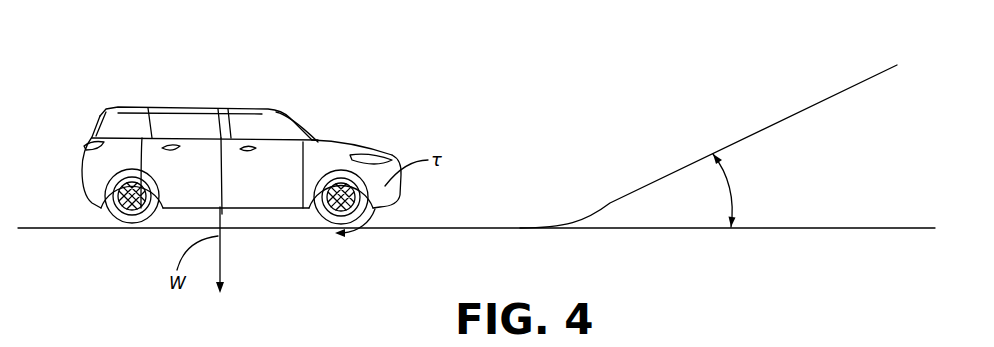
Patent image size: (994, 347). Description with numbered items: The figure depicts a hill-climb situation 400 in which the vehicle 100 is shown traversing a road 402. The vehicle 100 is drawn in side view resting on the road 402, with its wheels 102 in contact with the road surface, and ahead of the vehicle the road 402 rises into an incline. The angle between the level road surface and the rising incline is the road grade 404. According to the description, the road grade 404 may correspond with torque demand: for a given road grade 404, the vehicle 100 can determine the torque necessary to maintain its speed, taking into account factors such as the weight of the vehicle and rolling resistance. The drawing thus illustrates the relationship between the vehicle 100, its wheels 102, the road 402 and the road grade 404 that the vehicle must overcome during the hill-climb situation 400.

The vehicle 100 is at (192, 98).
The wheel 102 is at (108, 218).
The hill-climb situation 400 is at (590, 66).
The road 402 is at (374, 218).
The road grade 404 is at (731, 196).